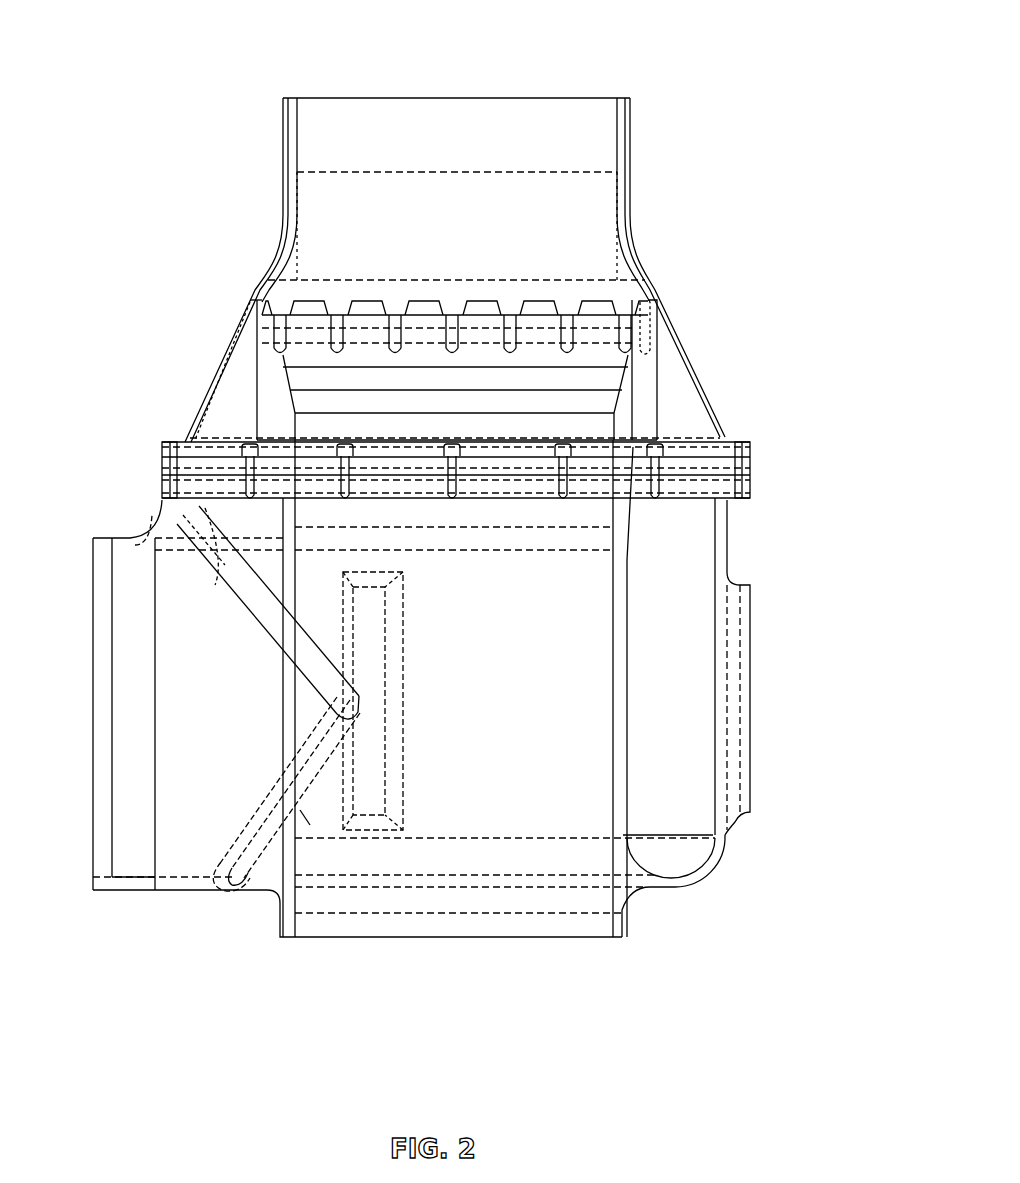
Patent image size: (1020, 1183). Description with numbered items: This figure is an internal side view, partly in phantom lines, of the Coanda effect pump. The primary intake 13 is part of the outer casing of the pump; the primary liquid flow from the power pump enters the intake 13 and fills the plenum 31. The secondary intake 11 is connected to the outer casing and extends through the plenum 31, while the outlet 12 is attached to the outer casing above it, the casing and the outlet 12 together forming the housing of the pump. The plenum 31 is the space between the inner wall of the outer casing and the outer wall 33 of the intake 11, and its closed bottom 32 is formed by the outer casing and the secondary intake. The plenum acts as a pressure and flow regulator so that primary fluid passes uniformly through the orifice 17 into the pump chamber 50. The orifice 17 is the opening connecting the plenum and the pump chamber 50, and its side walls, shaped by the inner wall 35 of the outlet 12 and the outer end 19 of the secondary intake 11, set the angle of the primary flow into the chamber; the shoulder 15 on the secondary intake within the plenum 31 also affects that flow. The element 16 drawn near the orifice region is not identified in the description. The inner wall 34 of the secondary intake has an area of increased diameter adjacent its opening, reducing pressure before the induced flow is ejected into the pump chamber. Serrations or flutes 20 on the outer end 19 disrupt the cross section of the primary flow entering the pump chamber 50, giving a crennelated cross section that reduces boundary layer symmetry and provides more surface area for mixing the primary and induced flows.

The secondary intake 11 is at (575, 940).
The outlet 12 is at (555, 97).
The primary intake 13 is at (88, 797).
The shoulder 15 is at (630, 500).
The cap body 16 is at (657, 408).
The orifice 17 is at (662, 337).
The outer end of the secondary intake 19 is at (363, 300).
The serrations or flutes 20 is at (273, 150).
The plenum 31 is at (655, 667).
The closed bottom of the plenum 32 is at (675, 883).
The outer wall of the intake 33 is at (627, 730).
The inner wall of the secondary intake 34 is at (292, 574).
The inner wall of the outlet 35 is at (235, 368).
The pump chamber 50 is at (555, 267).